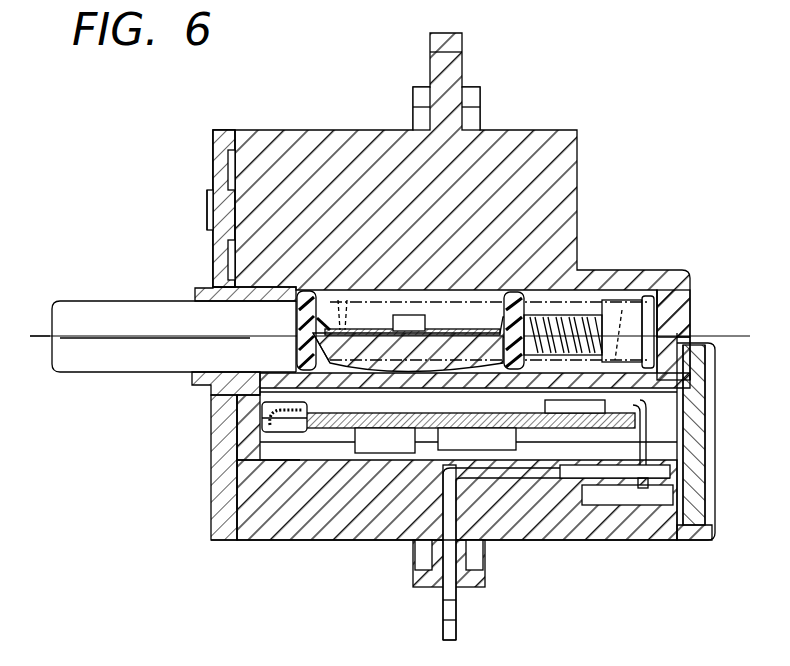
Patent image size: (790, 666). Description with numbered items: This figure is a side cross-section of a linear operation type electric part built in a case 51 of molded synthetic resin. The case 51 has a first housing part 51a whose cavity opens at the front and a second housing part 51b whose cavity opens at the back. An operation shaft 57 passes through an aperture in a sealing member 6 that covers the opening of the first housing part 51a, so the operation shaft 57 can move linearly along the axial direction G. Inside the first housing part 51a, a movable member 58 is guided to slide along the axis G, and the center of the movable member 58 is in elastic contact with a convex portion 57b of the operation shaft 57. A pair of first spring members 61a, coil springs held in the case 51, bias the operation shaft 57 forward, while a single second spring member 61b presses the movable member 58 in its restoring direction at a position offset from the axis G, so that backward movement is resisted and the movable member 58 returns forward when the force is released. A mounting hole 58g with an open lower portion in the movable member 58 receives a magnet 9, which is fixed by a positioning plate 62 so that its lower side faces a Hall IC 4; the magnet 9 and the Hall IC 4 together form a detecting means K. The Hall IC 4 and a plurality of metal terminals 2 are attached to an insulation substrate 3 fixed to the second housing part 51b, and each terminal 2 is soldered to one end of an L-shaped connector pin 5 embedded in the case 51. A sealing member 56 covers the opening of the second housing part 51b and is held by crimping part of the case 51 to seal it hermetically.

The case 51 is at (585, 168).
The first housing part 51a is at (632, 367).
The second housing part 51b is at (290, 450).
The sealing member 56 is at (706, 412).
The operation shaft 57 is at (122, 296).
The convex portion 57b is at (290, 328).
The movable member 58 is at (300, 283).
The mounting hole 58g is at (373, 290).
The first spring members 61a is at (348, 300).
The second spring member 61b is at (622, 330).
The positioning plate 62 is at (496, 290).
The sealing member 6 is at (200, 290).
The magnet 9 is at (245, 480).
The L-shaped connector pin 5 is at (443, 632).
The Hall IC 4 is at (462, 400).
The insulation substrate 3 is at (570, 435).
The metal terminals 2 is at (633, 452).
The detecting means K is at (350, 525).
The axial direction G is at (46, 345).